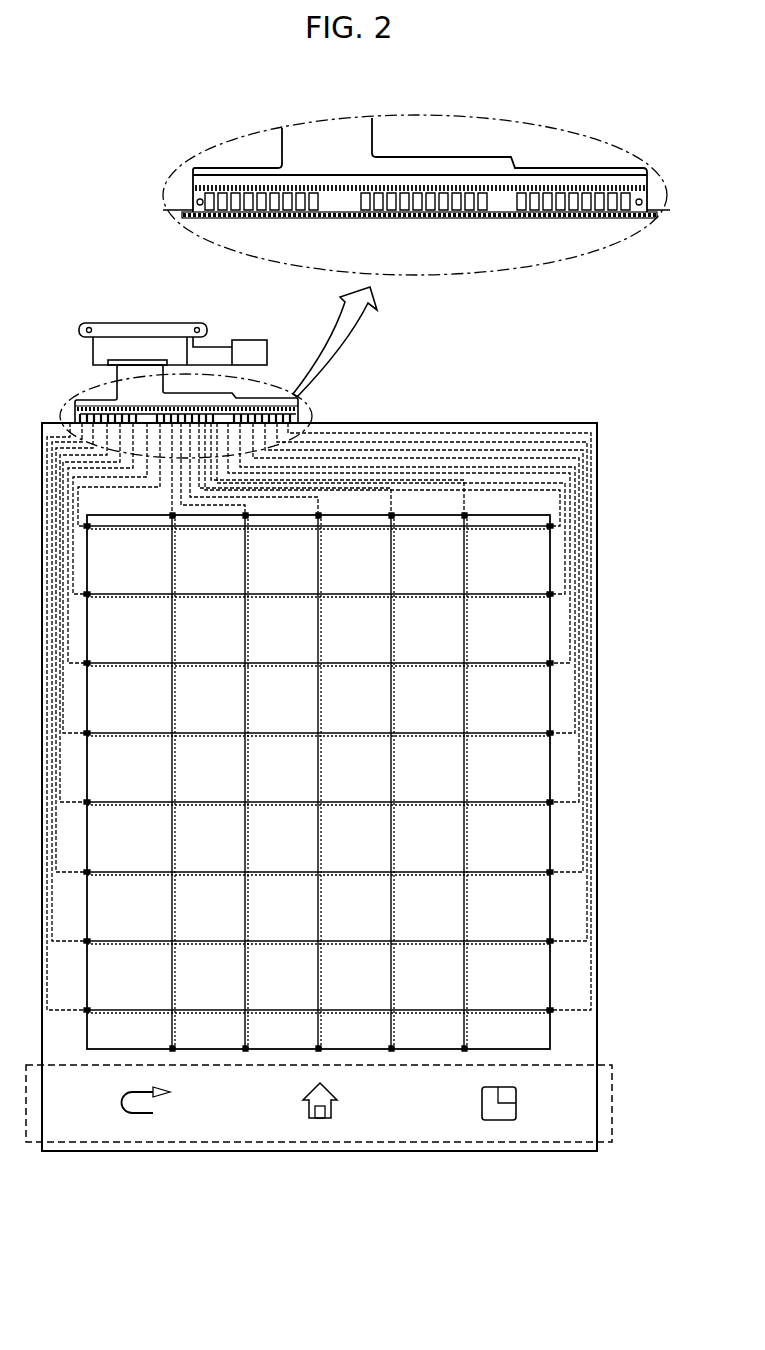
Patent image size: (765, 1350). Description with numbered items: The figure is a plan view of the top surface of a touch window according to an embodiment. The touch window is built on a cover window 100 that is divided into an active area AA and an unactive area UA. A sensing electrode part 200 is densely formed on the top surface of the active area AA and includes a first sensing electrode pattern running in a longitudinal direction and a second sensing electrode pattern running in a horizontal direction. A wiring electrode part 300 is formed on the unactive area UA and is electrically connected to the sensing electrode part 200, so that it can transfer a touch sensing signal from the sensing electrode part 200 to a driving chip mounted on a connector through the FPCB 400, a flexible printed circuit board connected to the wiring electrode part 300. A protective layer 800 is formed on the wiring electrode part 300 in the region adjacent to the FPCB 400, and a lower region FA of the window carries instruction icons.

The cover window 100 is at (207, 234).
The sensing electrode part 200 is at (470, 557).
The wiring electrode part 300 is at (583, 690).
The FPCB 400 is at (190, 172).
The protective layer 800 is at (498, 219).
The unactive area UA is at (367, 463).
The active area AA is at (318, 782).
The function area FA is at (612, 1102).